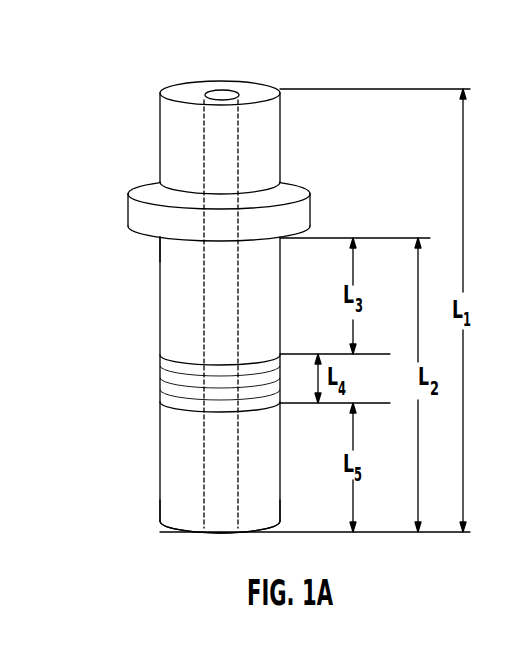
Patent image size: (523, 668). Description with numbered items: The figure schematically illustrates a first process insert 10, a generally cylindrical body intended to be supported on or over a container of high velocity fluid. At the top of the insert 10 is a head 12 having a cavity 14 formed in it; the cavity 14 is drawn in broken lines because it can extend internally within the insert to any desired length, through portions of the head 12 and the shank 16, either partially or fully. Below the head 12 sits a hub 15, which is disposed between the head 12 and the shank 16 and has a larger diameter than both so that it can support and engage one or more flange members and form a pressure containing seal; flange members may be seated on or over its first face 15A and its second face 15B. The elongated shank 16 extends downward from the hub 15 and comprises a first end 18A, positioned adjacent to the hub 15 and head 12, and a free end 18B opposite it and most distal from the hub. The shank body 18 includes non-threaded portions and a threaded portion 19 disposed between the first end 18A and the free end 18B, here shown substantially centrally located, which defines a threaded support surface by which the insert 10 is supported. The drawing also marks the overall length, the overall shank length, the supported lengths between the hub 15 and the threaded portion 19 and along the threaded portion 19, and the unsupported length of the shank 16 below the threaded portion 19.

The process insert 10 is at (104, 76).
The head 12 is at (158, 145).
The cavity 14 is at (222, 92).
The hub 15 is at (126, 200).
The first face 15A is at (287, 190).
The second face 15B is at (313, 228).
The shank 16 is at (113, 268).
The shank body 18 is at (188, 450).
The first end 18A is at (150, 254).
The free end 18B is at (150, 525).
The threaded portion 19 is at (153, 348).